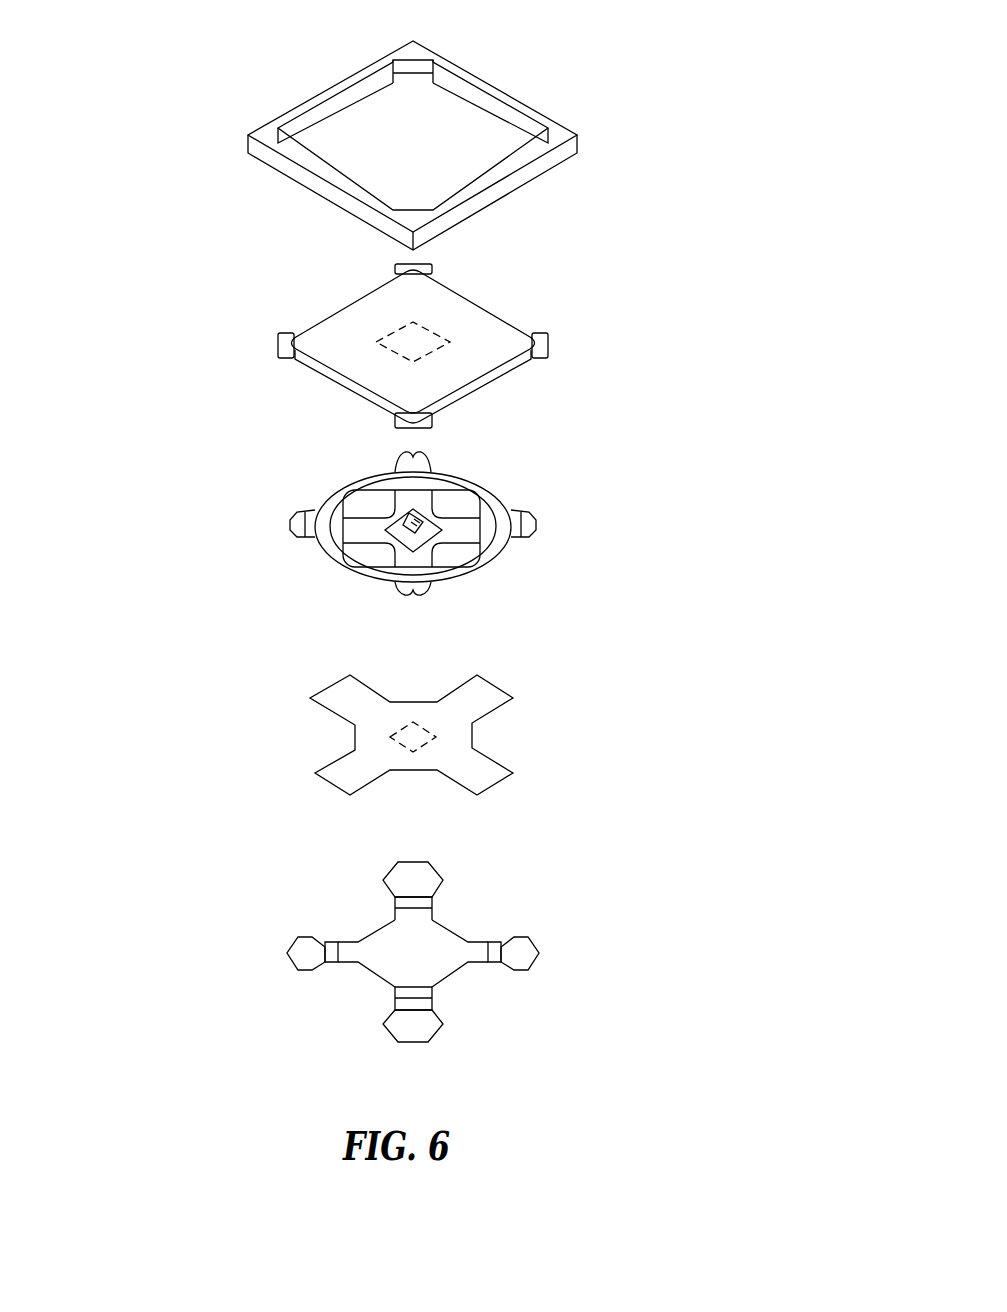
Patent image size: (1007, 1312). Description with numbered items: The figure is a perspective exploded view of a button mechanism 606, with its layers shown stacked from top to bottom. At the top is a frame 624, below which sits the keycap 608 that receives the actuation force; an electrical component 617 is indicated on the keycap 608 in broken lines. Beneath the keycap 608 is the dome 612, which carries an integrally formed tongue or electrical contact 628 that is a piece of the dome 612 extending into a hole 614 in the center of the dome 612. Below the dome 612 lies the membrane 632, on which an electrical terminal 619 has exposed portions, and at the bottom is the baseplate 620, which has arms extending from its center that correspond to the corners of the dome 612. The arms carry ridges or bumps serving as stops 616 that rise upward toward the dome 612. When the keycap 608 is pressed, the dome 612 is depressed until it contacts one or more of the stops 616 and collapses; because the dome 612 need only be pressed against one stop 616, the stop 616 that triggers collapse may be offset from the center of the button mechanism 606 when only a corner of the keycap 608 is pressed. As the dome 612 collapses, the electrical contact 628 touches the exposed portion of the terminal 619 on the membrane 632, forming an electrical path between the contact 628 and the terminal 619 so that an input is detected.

The button mechanism 606 is at (143, 193).
The frame 624 is at (497, 85).
The keycap 608 is at (493, 333).
The electrical component 617 is at (393, 327).
The dome 612 is at (493, 503).
The electrical contact 628 is at (410, 524).
The hole 614 is at (378, 529).
The membrane 632 is at (495, 697).
The electrical terminal 619 is at (397, 733).
The baseplate 620 is at (413, 950).
The stop 616 is at (330, 945).